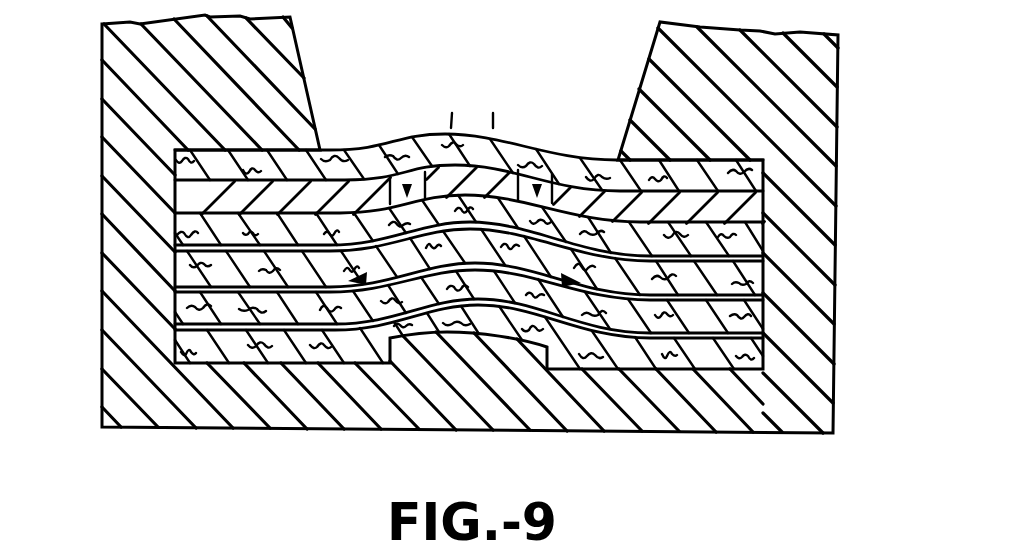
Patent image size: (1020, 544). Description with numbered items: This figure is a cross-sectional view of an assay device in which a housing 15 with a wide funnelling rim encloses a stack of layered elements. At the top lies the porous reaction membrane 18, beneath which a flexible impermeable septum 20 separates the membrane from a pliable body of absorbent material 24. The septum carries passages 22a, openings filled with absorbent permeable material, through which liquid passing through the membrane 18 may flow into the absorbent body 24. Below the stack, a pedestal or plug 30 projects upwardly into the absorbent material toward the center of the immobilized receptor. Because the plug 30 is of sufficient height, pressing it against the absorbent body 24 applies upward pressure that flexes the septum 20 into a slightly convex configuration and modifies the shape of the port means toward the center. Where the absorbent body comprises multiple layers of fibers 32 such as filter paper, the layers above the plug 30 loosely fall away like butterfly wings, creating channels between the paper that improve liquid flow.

The device housing 15 is at (103, 84).
The porous reaction membrane 18 is at (345, 160).
The septum 20 is at (572, 178).
The passages 22a is at (537, 184).
The body of absorbent material 24 is at (437, 264).
The plug 30 is at (490, 357).
The layers of fibers 32 is at (763, 296).